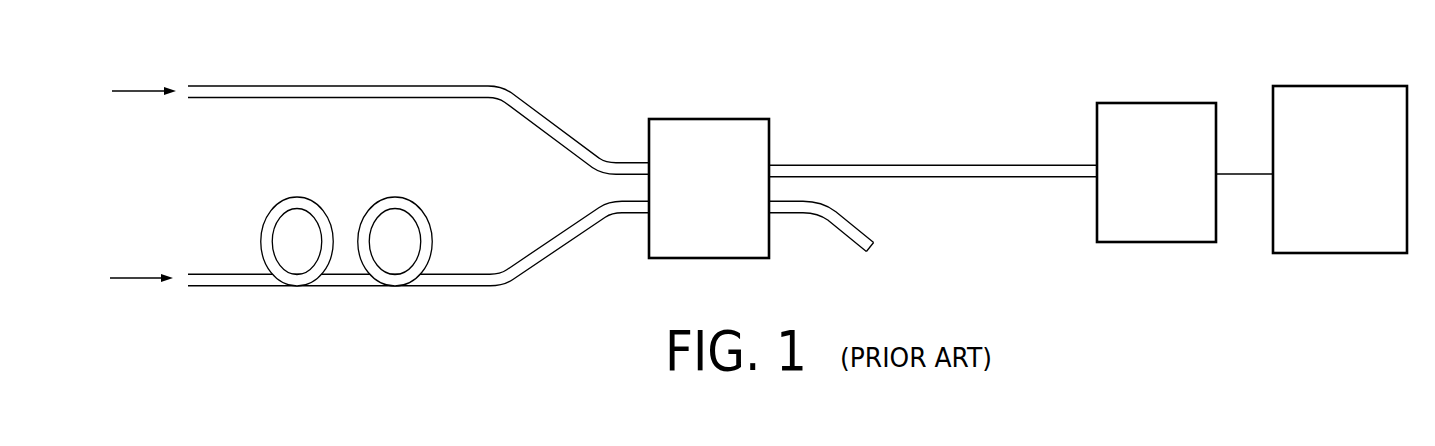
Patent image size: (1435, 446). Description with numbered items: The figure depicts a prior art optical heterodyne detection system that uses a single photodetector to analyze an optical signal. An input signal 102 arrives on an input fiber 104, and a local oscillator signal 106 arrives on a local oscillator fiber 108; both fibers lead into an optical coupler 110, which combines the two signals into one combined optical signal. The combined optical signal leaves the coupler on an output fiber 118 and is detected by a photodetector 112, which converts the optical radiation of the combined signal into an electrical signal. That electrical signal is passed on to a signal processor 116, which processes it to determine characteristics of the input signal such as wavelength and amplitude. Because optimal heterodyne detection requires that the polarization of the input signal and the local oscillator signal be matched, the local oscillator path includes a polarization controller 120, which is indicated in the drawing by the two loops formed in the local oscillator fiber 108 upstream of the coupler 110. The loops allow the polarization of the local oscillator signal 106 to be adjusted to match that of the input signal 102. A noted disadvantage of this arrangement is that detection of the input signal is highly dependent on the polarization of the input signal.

The input signal 102 is at (292, 70).
The input fiber 104 is at (505, 85).
The local oscillator signal 106 is at (206, 356).
The local oscillator fiber 108 is at (502, 287).
The optical coupler 110 is at (711, 118).
The photodetector 112 is at (1157, 102).
The signal processor 116 is at (1350, 85).
The output fiber 118 is at (963, 164).
The polarization controller 120 is at (343, 188).